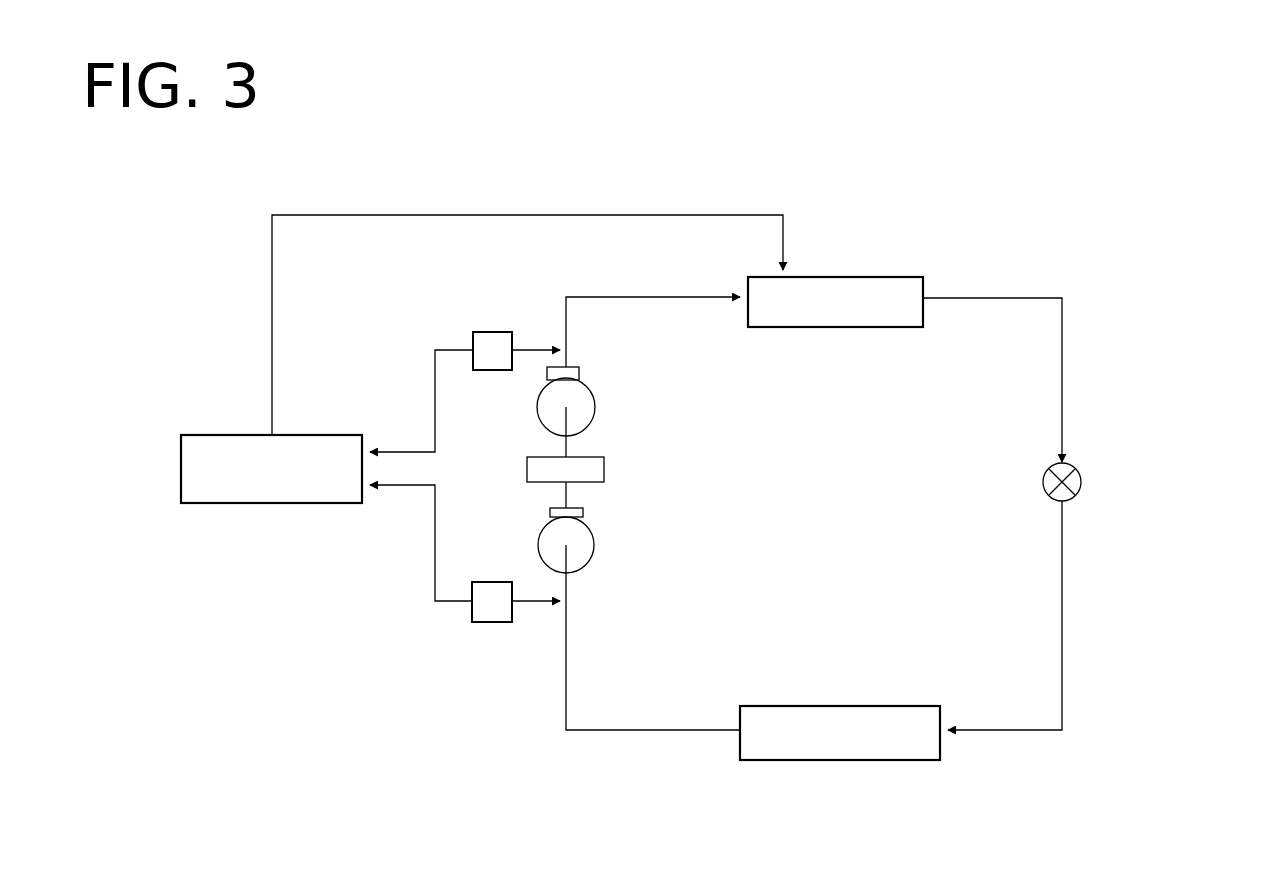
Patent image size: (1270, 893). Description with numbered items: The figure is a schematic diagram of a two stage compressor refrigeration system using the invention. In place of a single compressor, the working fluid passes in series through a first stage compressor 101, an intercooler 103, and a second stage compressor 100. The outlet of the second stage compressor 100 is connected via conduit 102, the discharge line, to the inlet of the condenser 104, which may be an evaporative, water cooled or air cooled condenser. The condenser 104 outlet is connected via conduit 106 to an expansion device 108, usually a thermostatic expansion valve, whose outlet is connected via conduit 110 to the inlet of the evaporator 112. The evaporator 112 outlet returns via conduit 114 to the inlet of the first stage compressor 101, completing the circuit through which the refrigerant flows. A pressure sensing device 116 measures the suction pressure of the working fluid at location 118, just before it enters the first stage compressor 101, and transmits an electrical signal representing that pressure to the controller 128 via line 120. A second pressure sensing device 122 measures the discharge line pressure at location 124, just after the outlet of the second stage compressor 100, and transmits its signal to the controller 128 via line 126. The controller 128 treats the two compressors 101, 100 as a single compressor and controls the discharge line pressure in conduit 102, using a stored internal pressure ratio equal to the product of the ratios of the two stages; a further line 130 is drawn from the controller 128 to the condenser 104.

The second stage compressor 100 is at (595, 407).
The first stage compressor 101 is at (594, 545).
The conduit 102 is at (647, 297).
The intercooler 103 is at (604, 470).
The condenser 104 is at (862, 277).
The conduit 106 is at (1063, 368).
The expansion device 108 is at (1081, 472).
The conduit 110 is at (1063, 608).
The evaporator 112 is at (915, 760).
The conduit 114 is at (628, 731).
The pressure sensing device 116 is at (472, 620).
The location 118 is at (566, 601).
The line 120 is at (435, 542).
The pressure sensing device 122 is at (480, 332).
The location 124 is at (566, 350).
The line 126 is at (435, 385).
The controller 128 is at (238, 435).
The controller output line 130 is at (592, 215).